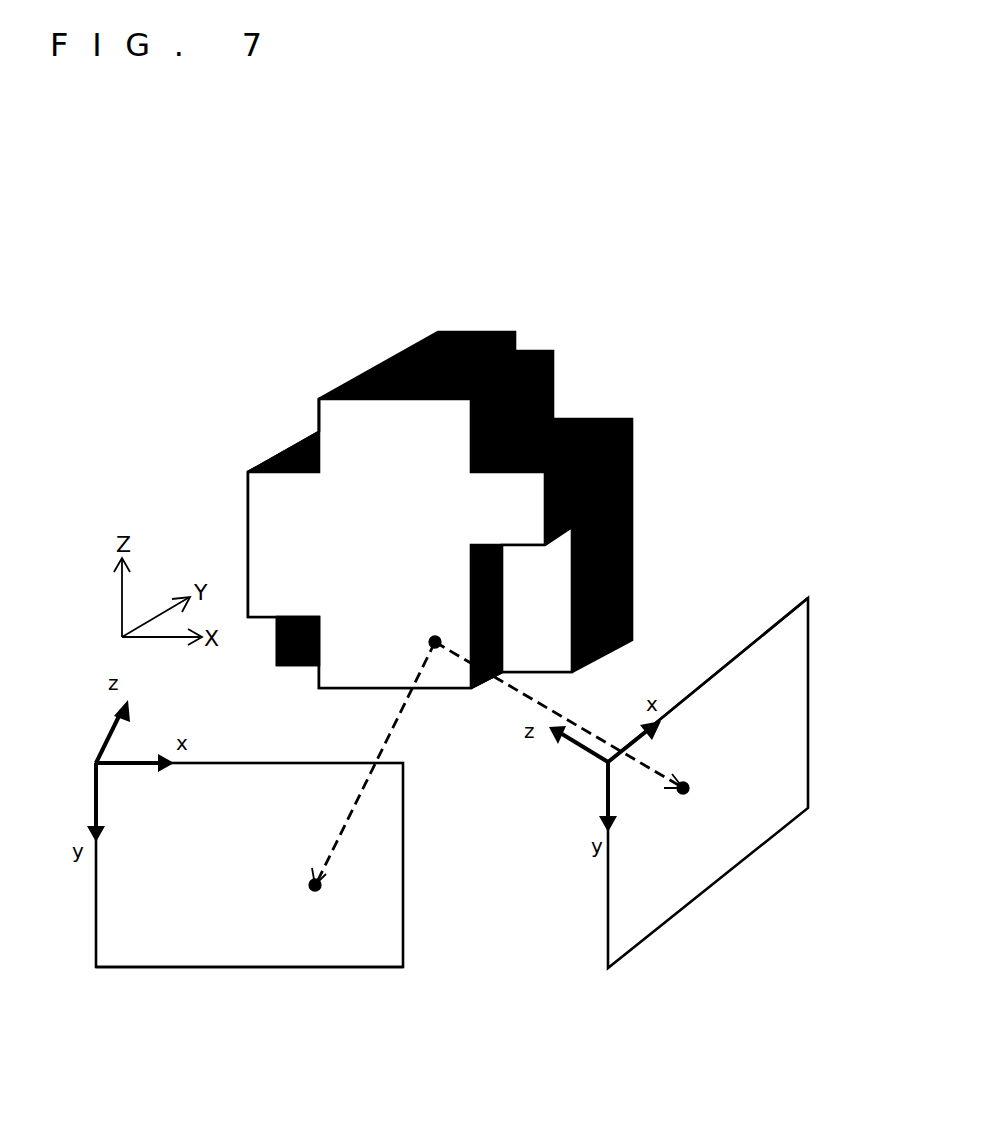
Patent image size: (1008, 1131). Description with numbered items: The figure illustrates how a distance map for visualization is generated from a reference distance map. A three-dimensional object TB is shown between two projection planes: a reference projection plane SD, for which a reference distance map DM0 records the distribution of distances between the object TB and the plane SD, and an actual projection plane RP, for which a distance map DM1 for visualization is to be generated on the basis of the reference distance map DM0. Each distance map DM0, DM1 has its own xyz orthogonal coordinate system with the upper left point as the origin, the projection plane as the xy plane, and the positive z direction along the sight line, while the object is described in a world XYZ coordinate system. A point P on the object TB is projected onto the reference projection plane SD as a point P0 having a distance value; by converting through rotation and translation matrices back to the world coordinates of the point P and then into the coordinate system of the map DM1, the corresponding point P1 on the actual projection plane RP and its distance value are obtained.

The three-dimensional object TB is at (539, 327).
The reference projection plane SD is at (729, 660).
The reference distance map DM0 is at (812, 687).
The distance map for visualization DM1 is at (133, 975).
The actual projection plane RP is at (201, 975).
The point on the three-dimensional object P is at (435, 648).
The point in the reference distance map P0 is at (683, 794).
The point on the actual projection plane P1 is at (315, 891).